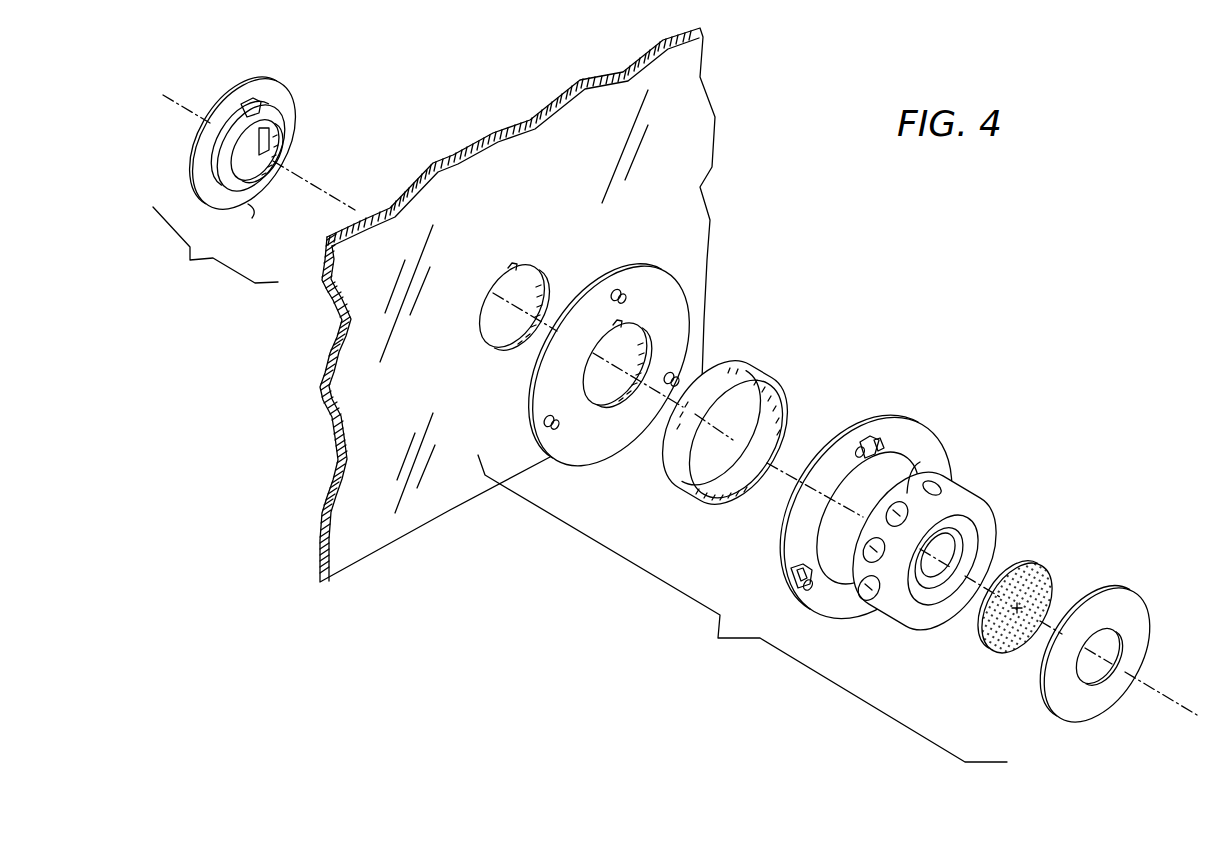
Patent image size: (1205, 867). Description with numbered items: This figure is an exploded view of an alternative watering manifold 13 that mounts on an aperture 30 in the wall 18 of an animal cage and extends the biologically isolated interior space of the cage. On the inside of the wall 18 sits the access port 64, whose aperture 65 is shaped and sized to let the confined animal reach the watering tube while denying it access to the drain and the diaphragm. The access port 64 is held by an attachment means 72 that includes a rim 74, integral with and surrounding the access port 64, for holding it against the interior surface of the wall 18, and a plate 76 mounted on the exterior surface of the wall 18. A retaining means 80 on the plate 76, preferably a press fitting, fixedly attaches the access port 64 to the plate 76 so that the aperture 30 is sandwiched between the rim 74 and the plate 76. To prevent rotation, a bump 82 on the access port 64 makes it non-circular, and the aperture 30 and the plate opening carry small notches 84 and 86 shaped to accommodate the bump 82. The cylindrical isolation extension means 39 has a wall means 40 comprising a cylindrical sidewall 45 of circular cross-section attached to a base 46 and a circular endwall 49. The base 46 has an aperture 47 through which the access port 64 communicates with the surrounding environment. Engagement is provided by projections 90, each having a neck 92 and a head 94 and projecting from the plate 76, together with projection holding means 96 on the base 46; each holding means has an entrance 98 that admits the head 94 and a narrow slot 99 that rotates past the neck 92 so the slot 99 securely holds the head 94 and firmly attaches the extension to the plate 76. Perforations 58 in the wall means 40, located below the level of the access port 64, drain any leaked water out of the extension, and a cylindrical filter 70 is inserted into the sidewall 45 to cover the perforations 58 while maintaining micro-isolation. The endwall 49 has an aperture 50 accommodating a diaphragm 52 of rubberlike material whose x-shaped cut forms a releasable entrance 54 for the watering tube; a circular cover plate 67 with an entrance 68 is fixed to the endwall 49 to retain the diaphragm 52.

The watering manifold 13 is at (180, 281).
The wall 18 is at (698, 76).
The aperture 30 is at (493, 323).
The notch 84 is at (513, 267).
The attachment means 72 is at (297, 112).
The rim 74 is at (205, 142).
The bump 82 is at (250, 104).
The aperture 65 is at (263, 136).
The access port 64 is at (251, 206).
The plate 76 is at (656, 278).
The retaining means 80 is at (612, 397).
The notch 86 is at (622, 323).
The neck 92 is at (616, 291).
The head 94 is at (614, 302).
The projection 90 is at (631, 292).
The filter 70 is at (765, 370).
The base 46 is at (798, 505).
The aperture 47 is at (863, 495).
The projection holding means 96 is at (865, 440).
The entrance 98 is at (877, 440).
The narrow slot 99 is at (857, 449).
The cylindrical isolation extension means 39 is at (1029, 543).
The cylindrical sidewall 45 is at (929, 462).
The perforation 58 is at (936, 486).
The circular endwall 49 is at (995, 511).
The wall means 40 is at (987, 570).
The aperture 50 is at (928, 580).
The releasable entrance 54 is at (1045, 575).
The diaphragm 52 is at (1006, 650).
The cover plate 67 is at (1142, 620).
The entrance 68 is at (1110, 650).